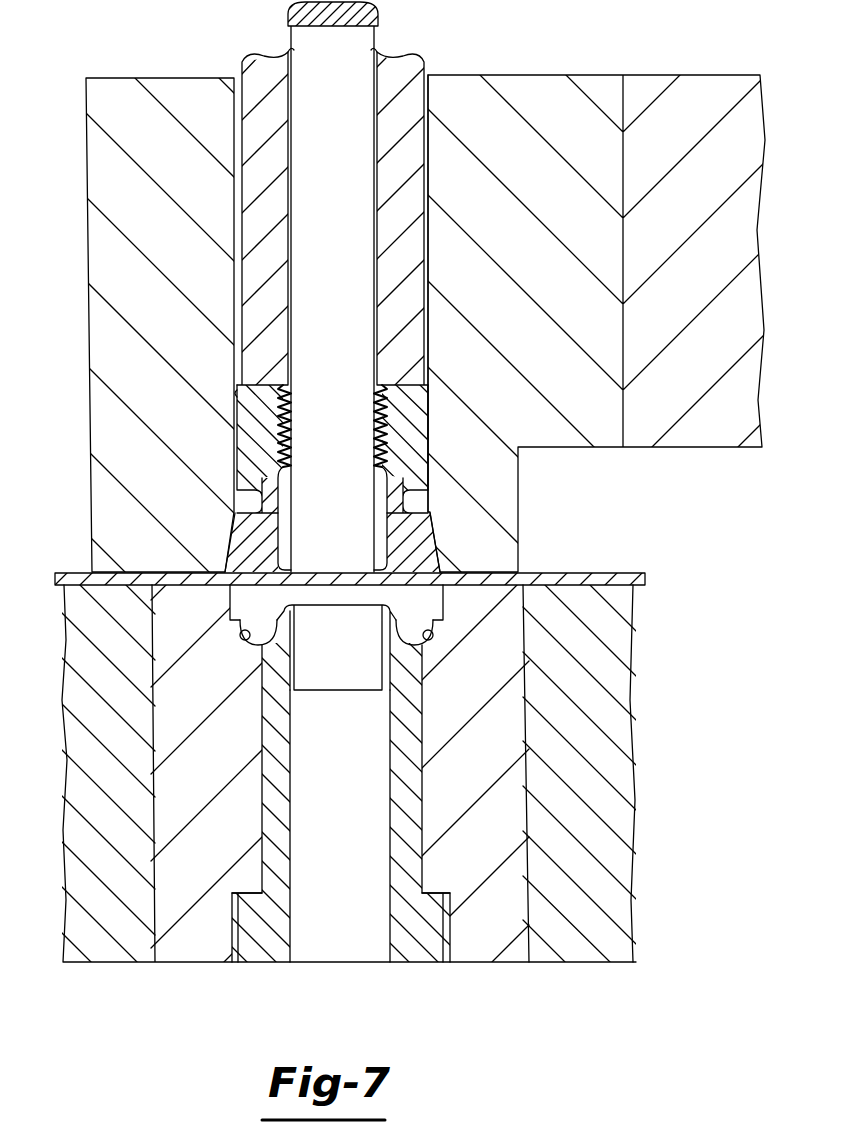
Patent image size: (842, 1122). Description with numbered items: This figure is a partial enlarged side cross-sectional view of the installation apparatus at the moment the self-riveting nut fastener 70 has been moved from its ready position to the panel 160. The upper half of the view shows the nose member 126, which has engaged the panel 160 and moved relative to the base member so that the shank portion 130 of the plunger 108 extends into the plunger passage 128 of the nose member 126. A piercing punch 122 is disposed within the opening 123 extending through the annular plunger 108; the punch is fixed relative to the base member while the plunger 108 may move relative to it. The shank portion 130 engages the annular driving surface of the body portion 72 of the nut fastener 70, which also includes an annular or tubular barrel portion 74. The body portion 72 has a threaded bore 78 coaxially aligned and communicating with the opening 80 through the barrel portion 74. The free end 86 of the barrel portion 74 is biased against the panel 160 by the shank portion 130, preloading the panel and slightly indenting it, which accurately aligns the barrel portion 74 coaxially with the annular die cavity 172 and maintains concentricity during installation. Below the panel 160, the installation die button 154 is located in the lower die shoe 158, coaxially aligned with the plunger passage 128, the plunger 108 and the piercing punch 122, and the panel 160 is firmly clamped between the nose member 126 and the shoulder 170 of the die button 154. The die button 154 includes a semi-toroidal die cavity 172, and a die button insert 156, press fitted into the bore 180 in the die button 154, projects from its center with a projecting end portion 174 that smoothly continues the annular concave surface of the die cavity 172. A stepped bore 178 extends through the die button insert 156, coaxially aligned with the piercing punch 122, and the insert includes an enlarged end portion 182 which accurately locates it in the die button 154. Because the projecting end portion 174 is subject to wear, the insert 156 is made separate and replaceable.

The plunger 108 is at (240, 149).
The piercing punch 122 is at (352, 272).
The opening 123 is at (363, 117).
The nose member 126 is at (593, 330).
The plunger passage 128 is at (237, 393).
The shank portion 130 is at (408, 193).
The self-riveting nut fastener 70 is at (436, 435).
The body portion 72 is at (258, 436).
The barrel portion 74 is at (262, 522).
The threaded bore 78 is at (293, 420).
The opening 80 is at (276, 527).
The free end 86 is at (258, 590).
The die button 154 is at (521, 695).
The die button insert 156 is at (413, 840).
The lower die shoe 158 is at (640, 738).
The panel 160 is at (584, 578).
The shoulder 170 is at (537, 611).
The die cavity 172 is at (250, 644).
The projecting end portion 174 is at (400, 614).
The stepped bore 178 is at (300, 673).
The bore 180 is at (414, 708).
The enlarged end portion 182 is at (258, 948).